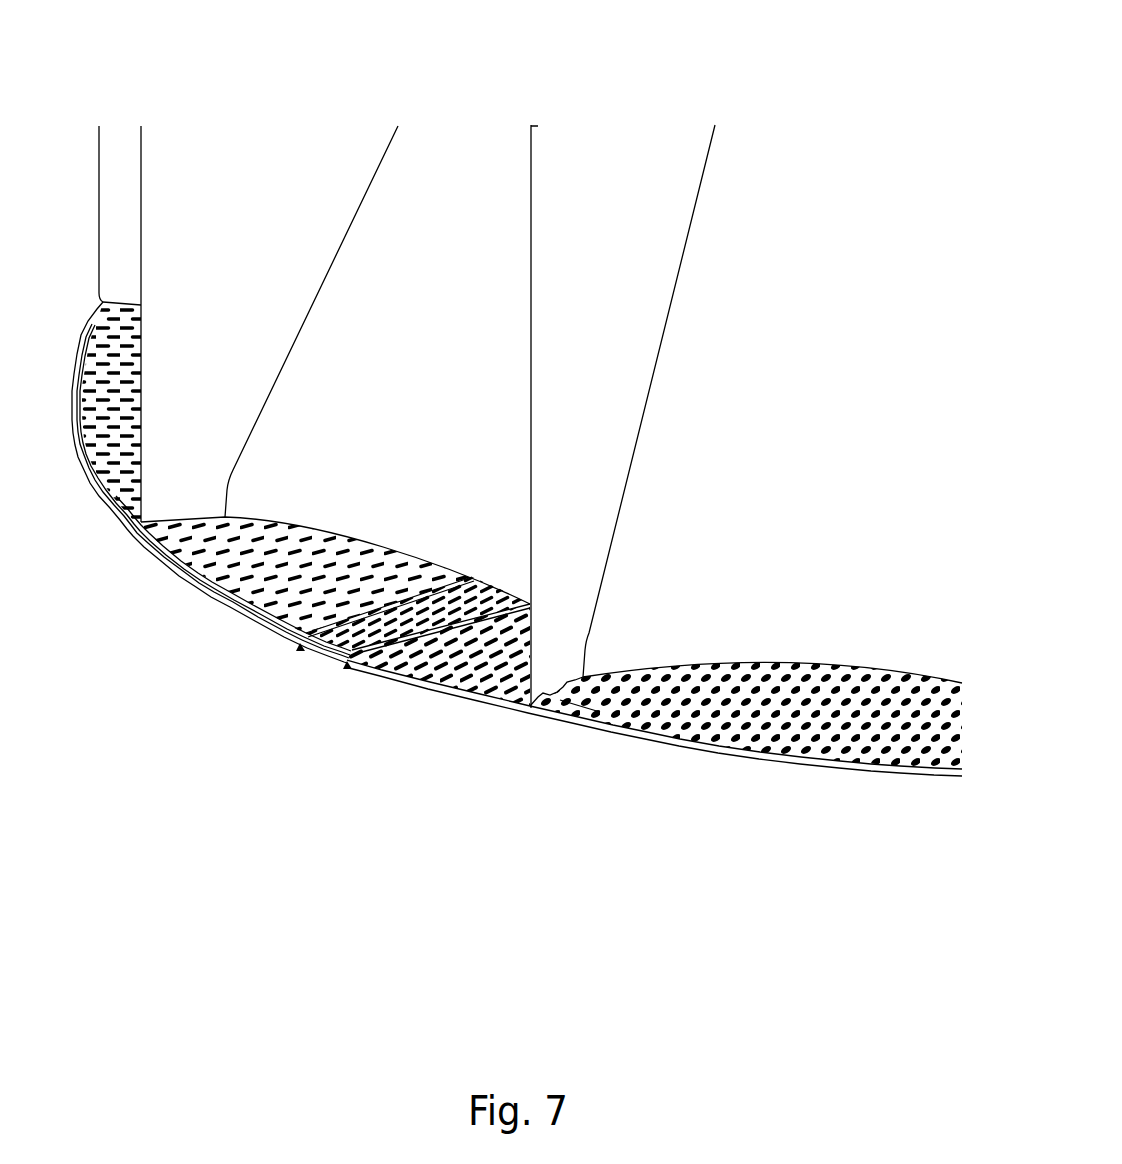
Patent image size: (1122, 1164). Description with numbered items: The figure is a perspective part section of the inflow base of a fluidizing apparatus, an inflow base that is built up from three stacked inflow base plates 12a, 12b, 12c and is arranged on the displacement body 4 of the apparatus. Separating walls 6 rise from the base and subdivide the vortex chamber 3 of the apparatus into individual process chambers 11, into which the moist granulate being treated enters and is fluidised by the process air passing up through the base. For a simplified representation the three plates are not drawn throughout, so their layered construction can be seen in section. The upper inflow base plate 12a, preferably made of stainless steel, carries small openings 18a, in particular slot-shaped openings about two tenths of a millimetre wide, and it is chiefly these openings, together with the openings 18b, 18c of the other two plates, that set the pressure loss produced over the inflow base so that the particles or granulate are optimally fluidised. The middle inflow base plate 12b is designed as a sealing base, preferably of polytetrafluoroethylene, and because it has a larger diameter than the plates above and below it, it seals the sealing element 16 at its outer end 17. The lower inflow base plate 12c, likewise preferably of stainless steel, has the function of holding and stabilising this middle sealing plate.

The vortex chamber 3 is at (494, 320).
The displacement body 4 is at (442, 222).
The separating walls 6 is at (121, 147).
The process chambers 11 is at (115, 345).
The upper inflow base plate 12a is at (167, 562).
The middle inflow base plate 12b is at (295, 642).
The lower inflow base plate 12c is at (428, 690).
The sealing element 16 is at (333, 657).
The outer end 17 is at (362, 667).
The openings of the upper inflow base plate 18a is at (243, 612).
The openings of the middle inflow base plate 18b is at (298, 647).
The openings of the lower inflow base plate 18c is at (793, 727).